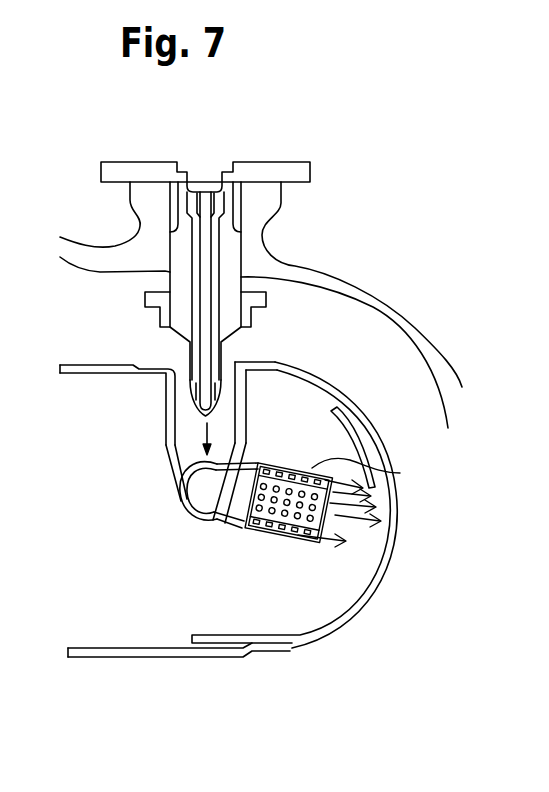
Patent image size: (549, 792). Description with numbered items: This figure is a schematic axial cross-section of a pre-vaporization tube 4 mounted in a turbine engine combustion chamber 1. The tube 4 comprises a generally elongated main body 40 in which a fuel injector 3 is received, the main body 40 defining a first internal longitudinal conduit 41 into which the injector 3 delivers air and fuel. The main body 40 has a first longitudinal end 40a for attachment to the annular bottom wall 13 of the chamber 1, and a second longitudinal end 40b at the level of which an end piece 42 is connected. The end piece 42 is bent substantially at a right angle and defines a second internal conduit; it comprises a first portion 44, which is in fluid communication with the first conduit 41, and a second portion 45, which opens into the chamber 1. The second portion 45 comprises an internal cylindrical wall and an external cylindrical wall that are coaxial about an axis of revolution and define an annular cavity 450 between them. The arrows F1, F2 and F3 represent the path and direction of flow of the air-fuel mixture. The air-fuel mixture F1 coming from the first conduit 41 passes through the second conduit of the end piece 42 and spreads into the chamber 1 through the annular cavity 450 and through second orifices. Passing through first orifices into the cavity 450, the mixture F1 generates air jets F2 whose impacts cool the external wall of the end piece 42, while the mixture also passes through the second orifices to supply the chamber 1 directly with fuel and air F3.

The combustion chamber 1 is at (133, 524).
The fuel injector 3 is at (160, 250).
The tube 4 is at (166, 516).
The bottom wall 13 is at (277, 251).
The main body 40 is at (227, 474).
The first longitudinal end 40a is at (153, 366).
The second longitudinal end 40b is at (175, 472).
The first internal longitudinal conduit 41 is at (188, 402).
The end piece 42 is at (207, 543).
The first portion 44 is at (193, 522).
The second portion 45 is at (243, 528).
The annular cavity 450 is at (325, 575).
The air-fuel mixture F1 is at (200, 428).
The air jets F2 is at (300, 468).
The fuel and air F3 is at (340, 515).